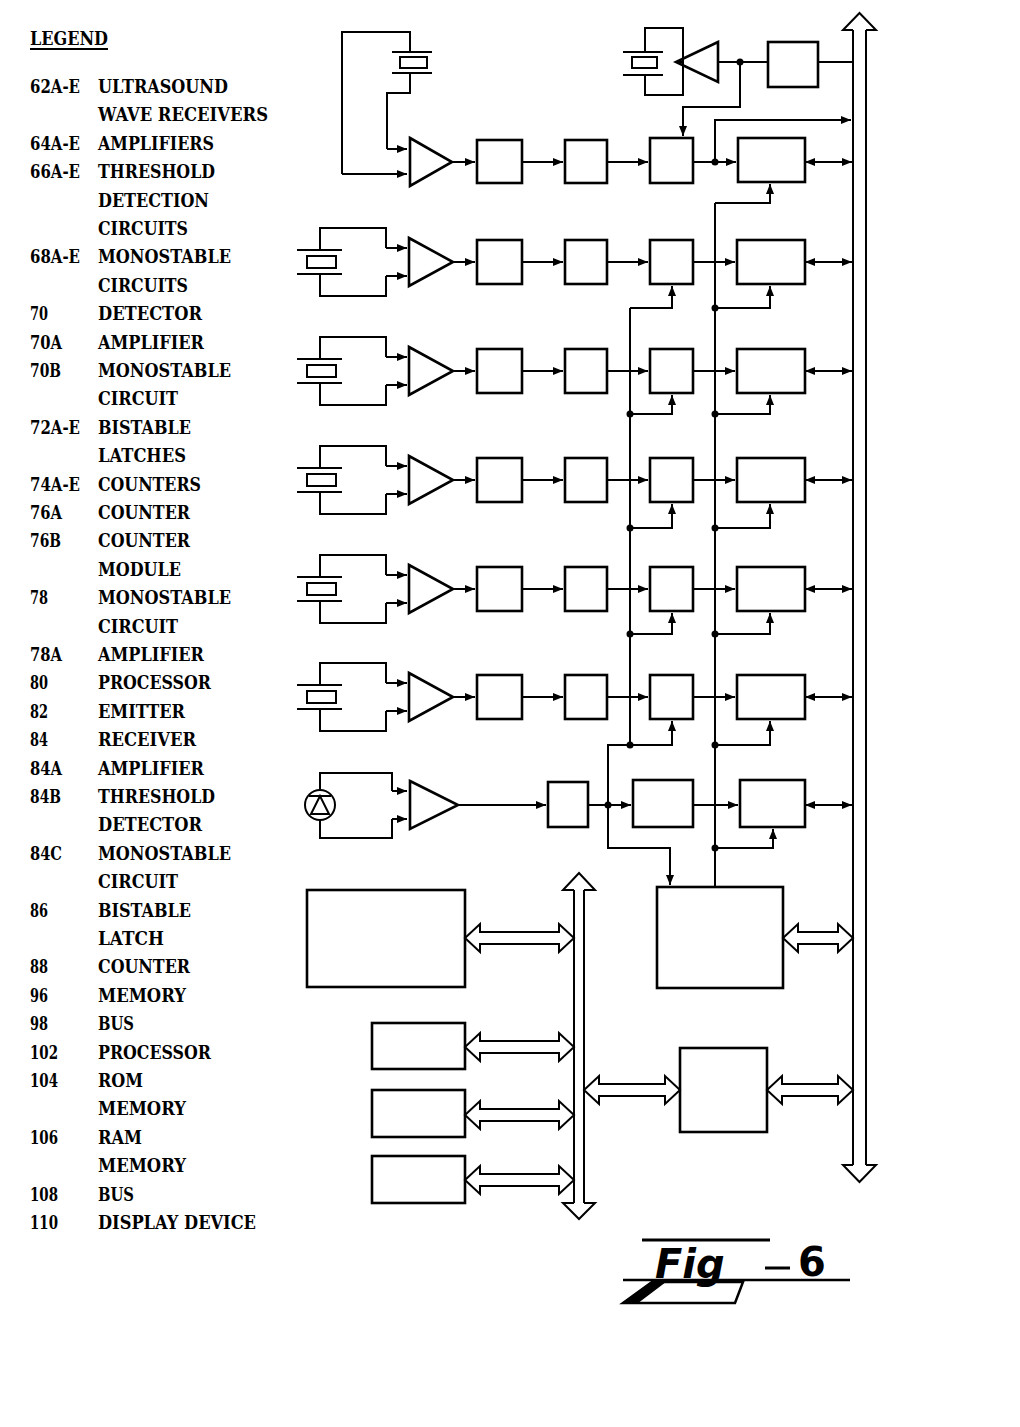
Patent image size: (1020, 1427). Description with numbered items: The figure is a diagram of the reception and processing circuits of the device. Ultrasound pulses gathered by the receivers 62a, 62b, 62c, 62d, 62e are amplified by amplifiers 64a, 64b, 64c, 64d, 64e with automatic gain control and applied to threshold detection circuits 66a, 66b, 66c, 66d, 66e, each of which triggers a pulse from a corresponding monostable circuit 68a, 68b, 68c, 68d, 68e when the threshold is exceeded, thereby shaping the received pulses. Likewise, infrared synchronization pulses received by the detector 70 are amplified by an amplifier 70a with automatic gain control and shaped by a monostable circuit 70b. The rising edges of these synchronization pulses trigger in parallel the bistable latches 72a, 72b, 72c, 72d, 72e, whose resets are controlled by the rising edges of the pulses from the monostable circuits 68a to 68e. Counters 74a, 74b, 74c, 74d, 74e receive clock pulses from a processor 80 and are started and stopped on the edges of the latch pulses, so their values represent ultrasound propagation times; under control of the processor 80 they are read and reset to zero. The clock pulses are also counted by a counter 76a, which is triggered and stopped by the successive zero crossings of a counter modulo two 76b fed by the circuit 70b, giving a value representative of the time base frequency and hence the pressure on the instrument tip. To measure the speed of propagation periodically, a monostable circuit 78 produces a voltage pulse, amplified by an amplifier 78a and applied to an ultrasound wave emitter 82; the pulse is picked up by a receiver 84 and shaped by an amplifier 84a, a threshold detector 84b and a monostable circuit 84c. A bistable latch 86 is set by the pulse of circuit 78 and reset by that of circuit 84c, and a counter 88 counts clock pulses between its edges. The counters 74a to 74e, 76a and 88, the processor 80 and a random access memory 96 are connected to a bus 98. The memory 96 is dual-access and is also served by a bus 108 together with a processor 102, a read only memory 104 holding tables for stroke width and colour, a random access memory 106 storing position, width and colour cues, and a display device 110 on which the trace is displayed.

The receiver 62a is at (304, 262).
The receiver 62b is at (304, 371).
The receiver 62c is at (304, 481).
The receiver 62d is at (304, 591).
The receiver 62e is at (304, 700).
The amplifier 64a is at (430, 252).
The amplifier 64b is at (423, 362).
The amplifier 64c is at (423, 470).
The amplifier 64d is at (423, 580).
The amplifier 64e is at (423, 690).
The threshold detection circuit 66a is at (497, 247).
The threshold detection circuit 66b is at (497, 357).
The threshold detection circuit 66c is at (495, 465).
The threshold detection circuit 66d is at (495, 575).
The threshold detection circuit 66e is at (495, 683).
The monostable circuit 68a is at (580, 247).
The monostable circuit 68b is at (580, 357).
The monostable circuit 68c is at (578, 465).
The monostable circuit 68d is at (578, 575).
The monostable circuit 68e is at (578, 683).
The detector 70 is at (305, 795).
The amplifier 70a is at (427, 795).
The monostable circuit 70b is at (565, 782).
The bistable latch 72a is at (668, 247).
The bistable latch 72b is at (672, 357).
The bistable latch 72c is at (668, 465).
The bistable latch 72d is at (668, 575).
The bistable latch 72e is at (668, 683).
The counter 74a is at (778, 247).
The counter 74b is at (780, 347).
The counter 74c is at (780, 465).
The counter 74d is at (778, 575).
The counter 74e is at (760, 677).
The counter 76a is at (785, 785).
The counter modulo 2 76b is at (655, 782).
The monostable circuit 78 is at (797, 47).
The amplifier 78a is at (698, 57).
The processor 80 is at (738, 946).
The ultrasound wave emitter 82 is at (625, 53).
The receiver 84 is at (425, 50).
The amplifier 84a is at (433, 148).
The threshold detector 84b is at (493, 143).
The monostable circuit 84c is at (588, 140).
The bistable latch 86 is at (650, 140).
The counter 88 is at (782, 148).
The random access memory 96 is at (737, 1103).
The bus 98 is at (853, 872).
The processor 102 is at (408, 948).
The read only memory 104 is at (439, 1059).
The random access memory 106 is at (439, 1127).
The bus 108 is at (584, 1028).
The display device 110 is at (439, 1193).